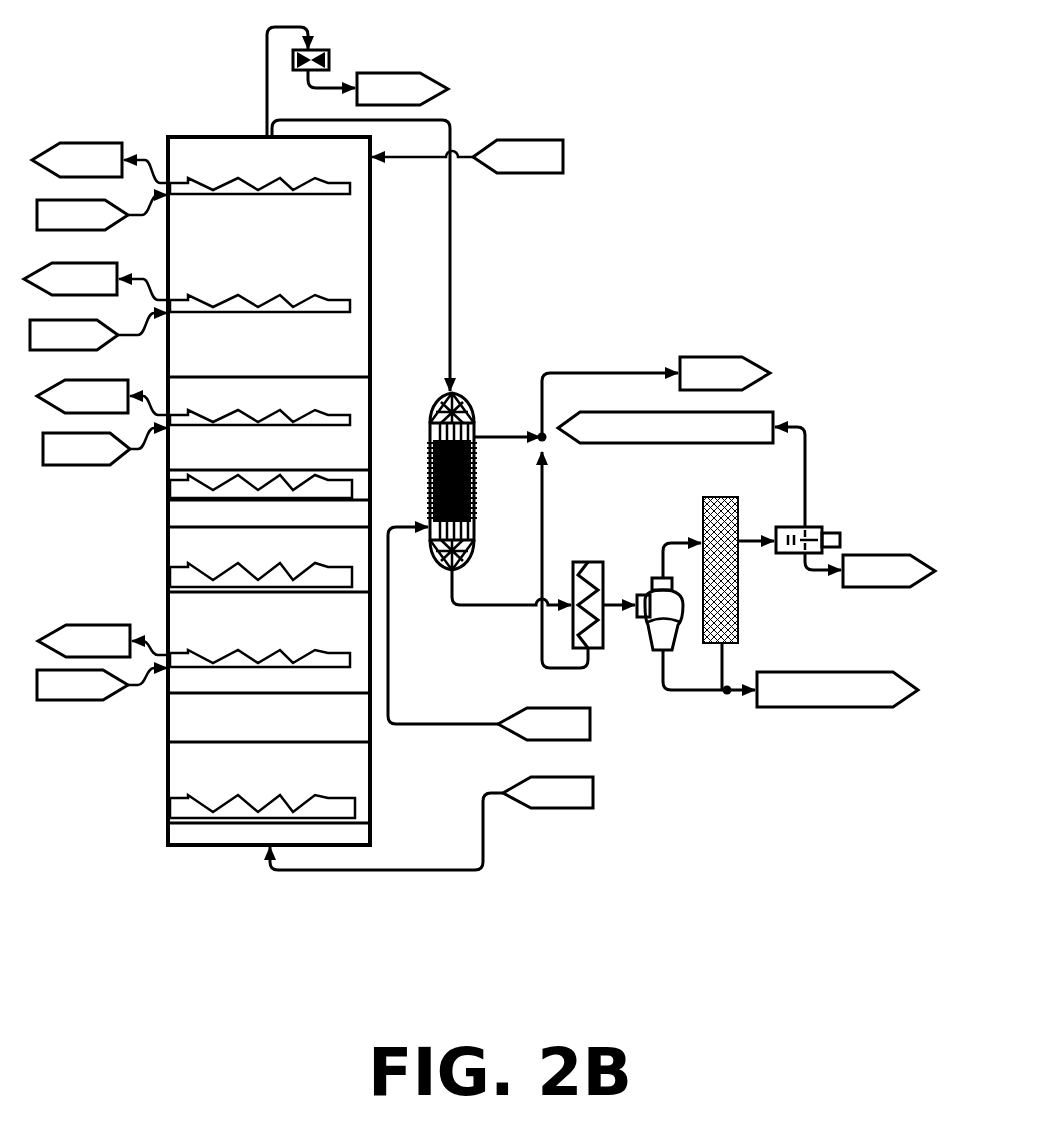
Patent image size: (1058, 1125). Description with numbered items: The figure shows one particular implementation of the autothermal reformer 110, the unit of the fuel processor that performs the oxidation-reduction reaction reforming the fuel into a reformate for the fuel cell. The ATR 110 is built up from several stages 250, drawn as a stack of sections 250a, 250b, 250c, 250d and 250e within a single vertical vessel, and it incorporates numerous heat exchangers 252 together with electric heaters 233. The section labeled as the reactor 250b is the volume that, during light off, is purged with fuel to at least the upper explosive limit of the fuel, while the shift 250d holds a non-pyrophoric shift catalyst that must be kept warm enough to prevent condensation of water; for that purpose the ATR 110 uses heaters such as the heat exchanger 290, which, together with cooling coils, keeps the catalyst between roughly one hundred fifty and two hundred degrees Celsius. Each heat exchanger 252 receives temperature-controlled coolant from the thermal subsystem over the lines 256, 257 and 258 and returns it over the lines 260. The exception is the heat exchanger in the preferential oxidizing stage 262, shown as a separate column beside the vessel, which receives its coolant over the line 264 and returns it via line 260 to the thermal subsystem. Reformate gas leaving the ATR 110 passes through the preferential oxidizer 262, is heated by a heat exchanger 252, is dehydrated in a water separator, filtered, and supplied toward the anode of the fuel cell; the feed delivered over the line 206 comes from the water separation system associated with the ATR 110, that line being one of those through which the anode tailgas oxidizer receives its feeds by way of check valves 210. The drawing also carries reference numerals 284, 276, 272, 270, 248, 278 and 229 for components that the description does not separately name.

The autothermal reformer 110 is at (155, 38).
The valve 284 is at (325, 50).
The stages 250 is at (335, 85).
The temperature sensor 276 is at (148, 157).
The line 256 is at (143, 216).
The heat exchanger 252 is at (307, 193).
The stage 250e is at (372, 252).
The line 257 is at (155, 329).
The line 260 is at (150, 397).
The shift 250d is at (372, 448).
The heat exchanger 290 is at (278, 480).
The air inlet line to shift bed 272 is at (140, 447).
The electric heater 233 is at (220, 503).
The preferential oxidizer 262 is at (462, 398).
The line 258 is at (160, 657).
The stage 250c is at (373, 607).
The air inlet line to zinc oxide bed 270 is at (167, 693).
The reactor 250b is at (373, 717).
The line 264 is at (517, 737).
The stage 250a is at (373, 795).
The water separator 248 is at (648, 585).
The heat exchanger 278 is at (595, 650).
The line 206 is at (822, 527).
The anode tail gas oxidizer supply line 229 is at (803, 568).
The check valve 210 is at (743, 593).